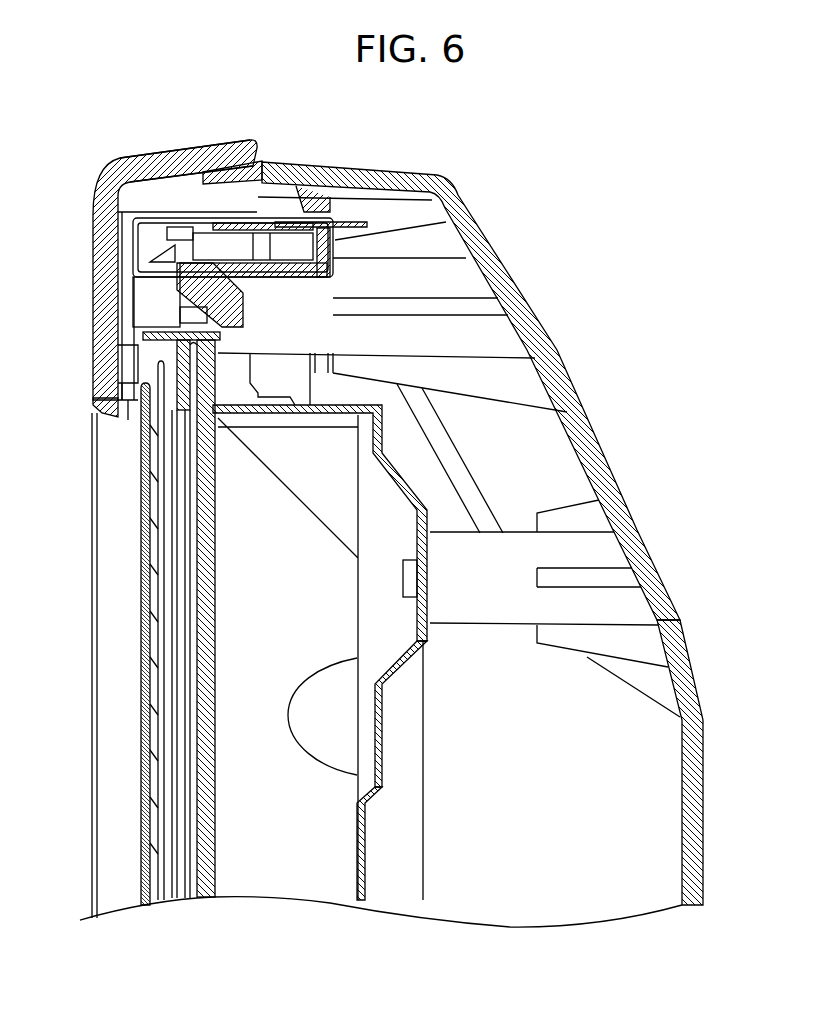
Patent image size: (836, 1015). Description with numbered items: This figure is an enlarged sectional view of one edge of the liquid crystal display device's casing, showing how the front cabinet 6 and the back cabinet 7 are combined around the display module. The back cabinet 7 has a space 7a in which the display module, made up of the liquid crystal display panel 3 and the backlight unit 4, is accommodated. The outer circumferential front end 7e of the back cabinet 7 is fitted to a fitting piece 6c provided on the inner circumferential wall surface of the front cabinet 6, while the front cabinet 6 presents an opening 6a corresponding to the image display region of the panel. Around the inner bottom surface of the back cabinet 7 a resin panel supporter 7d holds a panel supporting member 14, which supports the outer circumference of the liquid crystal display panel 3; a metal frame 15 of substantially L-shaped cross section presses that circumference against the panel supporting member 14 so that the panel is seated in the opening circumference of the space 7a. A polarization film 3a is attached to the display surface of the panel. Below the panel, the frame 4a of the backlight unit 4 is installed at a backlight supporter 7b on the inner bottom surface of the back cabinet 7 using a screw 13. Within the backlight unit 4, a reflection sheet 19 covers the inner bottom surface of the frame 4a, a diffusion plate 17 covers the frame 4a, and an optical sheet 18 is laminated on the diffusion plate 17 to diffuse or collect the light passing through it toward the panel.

The liquid crystal display panel 3 is at (150, 768).
The polarization film 3a is at (142, 608).
The backlight unit 4 is at (365, 770).
The frame 4a is at (363, 887).
The front cabinet 6 is at (97, 188).
The opening 6a is at (130, 418).
The fitting piece 6c is at (160, 194).
The back cabinet 7 is at (550, 375).
The space 7a is at (658, 797).
The backlight supporter 7b is at (587, 550).
The panel supporter 7d is at (497, 337).
The outer circumferential front end 7e is at (227, 143).
The screw 13 is at (410, 577).
The panel supporting member 14 is at (178, 265).
The frame 15 is at (138, 298).
The diffusion plate 17 is at (203, 850).
The optical sheet 18 is at (197, 868).
The reflection sheet 19 is at (320, 515).